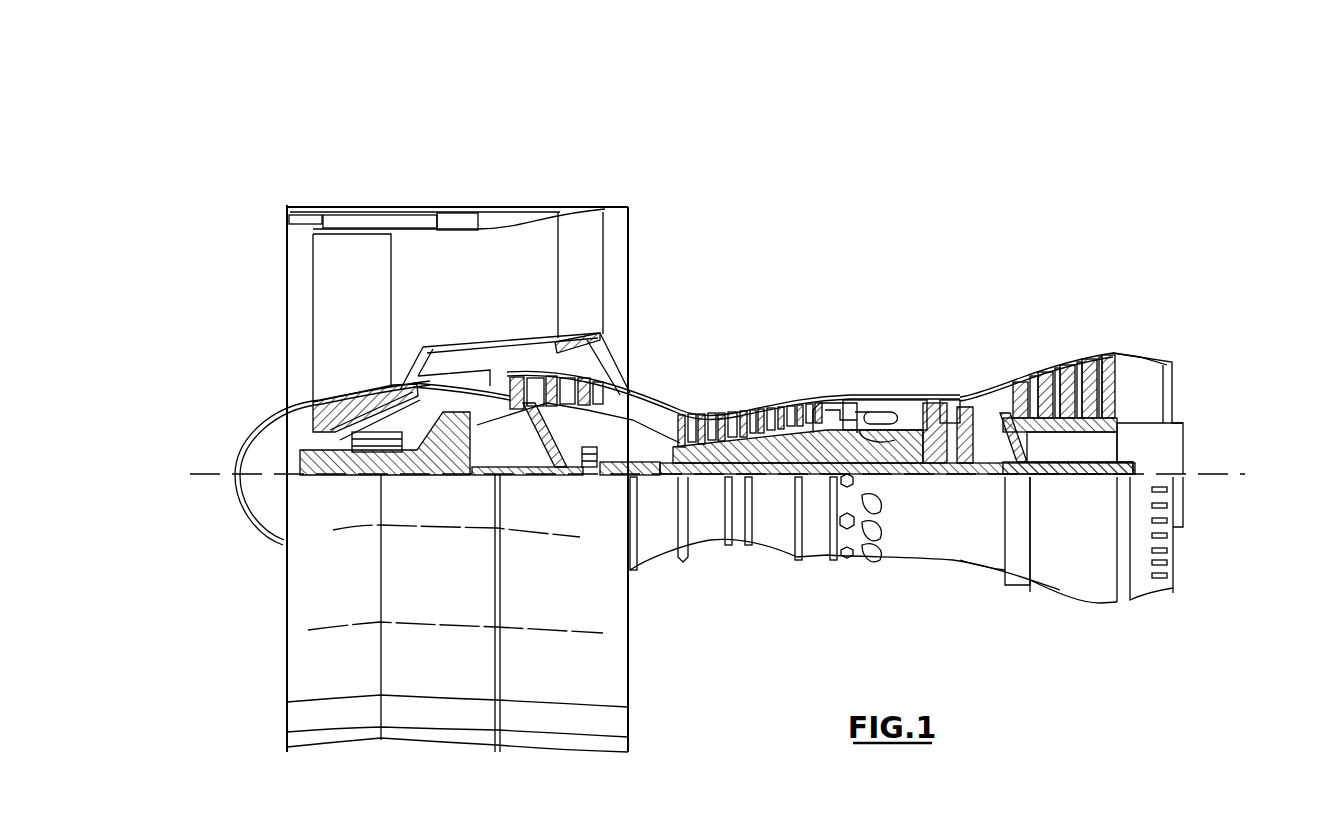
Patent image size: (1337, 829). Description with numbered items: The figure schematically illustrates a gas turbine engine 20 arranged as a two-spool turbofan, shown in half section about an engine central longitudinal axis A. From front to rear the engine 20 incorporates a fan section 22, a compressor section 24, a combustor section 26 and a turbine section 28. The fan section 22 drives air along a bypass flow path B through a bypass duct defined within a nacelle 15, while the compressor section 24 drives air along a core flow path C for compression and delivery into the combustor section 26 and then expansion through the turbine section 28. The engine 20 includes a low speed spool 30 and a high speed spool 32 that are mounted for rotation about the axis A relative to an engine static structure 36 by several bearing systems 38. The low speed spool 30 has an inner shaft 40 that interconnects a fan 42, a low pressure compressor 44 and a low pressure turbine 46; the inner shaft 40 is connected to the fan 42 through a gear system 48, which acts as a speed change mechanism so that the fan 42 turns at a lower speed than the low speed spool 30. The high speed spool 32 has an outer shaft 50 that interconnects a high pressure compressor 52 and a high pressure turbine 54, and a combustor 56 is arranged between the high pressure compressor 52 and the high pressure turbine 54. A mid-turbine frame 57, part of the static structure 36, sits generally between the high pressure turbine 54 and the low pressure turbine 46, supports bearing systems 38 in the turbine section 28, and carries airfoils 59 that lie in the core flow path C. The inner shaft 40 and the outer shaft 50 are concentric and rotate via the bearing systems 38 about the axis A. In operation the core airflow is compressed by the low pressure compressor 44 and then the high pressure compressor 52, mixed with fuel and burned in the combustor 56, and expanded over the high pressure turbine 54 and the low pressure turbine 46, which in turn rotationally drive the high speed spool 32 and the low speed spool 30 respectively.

The nacelle 15 is at (457, 213).
The gas turbine engine 20 is at (890, 253).
The fan section 22 is at (392, 198).
The compressor section 24 is at (816, 396).
The combustor section 26 is at (900, 416).
The turbine section 28 is at (1071, 443).
The low speed spool 30 is at (775, 480).
The high speed spool 32 is at (816, 416).
The engine static structure 36 is at (813, 560).
The bearing systems 38 is at (590, 466).
The inner shaft 40 is at (650, 480).
The fan 42 is at (337, 328).
The low pressure compressor 44 is at (552, 392).
The low pressure turbine 46 is at (1065, 360).
The gear system 48 is at (465, 461).
The outer shaft 50 is at (892, 468).
The high pressure compressor 52 is at (750, 443).
The high pressure turbine 54 is at (947, 398).
The combustor 56 is at (886, 420).
The mid-turbine frame 57 is at (990, 386).
The airfoils 59 is at (1022, 434).
The engine central longitudinal axis A is at (1250, 474).
The bypass flow path B is at (425, 281).
The core flow path C is at (462, 378).